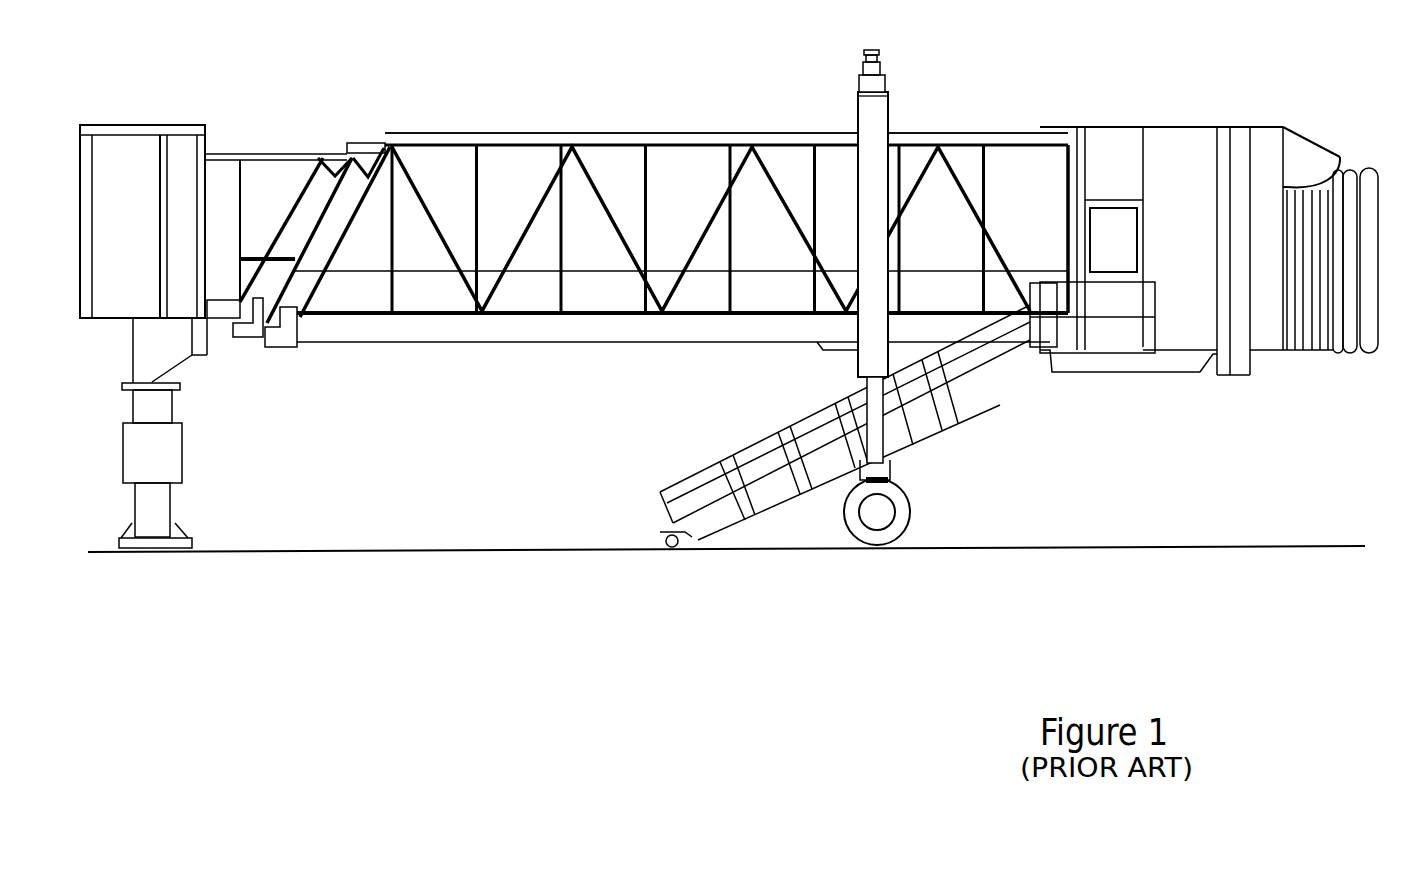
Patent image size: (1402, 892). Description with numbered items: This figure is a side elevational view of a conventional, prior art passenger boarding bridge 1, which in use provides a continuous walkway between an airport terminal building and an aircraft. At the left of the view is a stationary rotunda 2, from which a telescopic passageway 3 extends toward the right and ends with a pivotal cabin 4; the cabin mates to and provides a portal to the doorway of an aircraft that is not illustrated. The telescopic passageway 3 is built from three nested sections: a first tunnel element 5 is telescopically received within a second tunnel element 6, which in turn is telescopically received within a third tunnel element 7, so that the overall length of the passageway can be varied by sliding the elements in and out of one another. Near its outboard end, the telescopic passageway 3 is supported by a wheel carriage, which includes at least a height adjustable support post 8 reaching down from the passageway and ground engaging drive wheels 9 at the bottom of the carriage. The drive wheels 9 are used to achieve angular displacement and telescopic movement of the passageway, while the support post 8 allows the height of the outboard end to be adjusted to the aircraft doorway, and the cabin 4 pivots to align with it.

The passenger boarding bridge 1 is at (660, 102).
The stationary rotunda 2 is at (132, 148).
The telescopic passageway 3 is at (427, 136).
The pivotal cabin 4 is at (1260, 127).
The first tunnel element 5 is at (265, 183).
The second tunnel element 6 is at (338, 203).
The third tunnel element 7 is at (375, 245).
The height adjustable support post 8 is at (912, 76).
The ground engaging drive wheels 9 is at (912, 512).